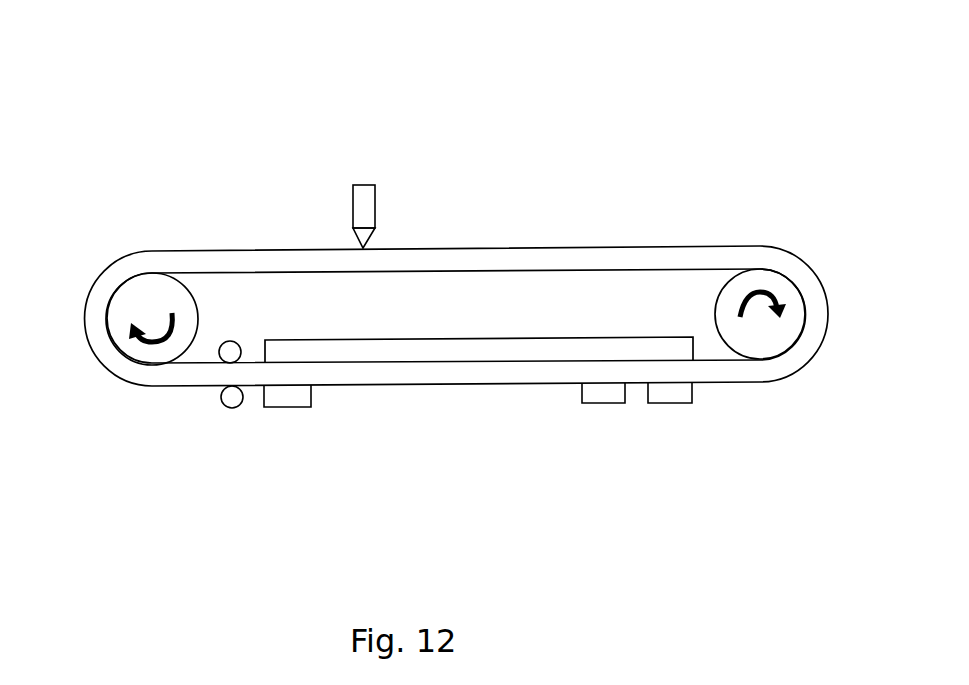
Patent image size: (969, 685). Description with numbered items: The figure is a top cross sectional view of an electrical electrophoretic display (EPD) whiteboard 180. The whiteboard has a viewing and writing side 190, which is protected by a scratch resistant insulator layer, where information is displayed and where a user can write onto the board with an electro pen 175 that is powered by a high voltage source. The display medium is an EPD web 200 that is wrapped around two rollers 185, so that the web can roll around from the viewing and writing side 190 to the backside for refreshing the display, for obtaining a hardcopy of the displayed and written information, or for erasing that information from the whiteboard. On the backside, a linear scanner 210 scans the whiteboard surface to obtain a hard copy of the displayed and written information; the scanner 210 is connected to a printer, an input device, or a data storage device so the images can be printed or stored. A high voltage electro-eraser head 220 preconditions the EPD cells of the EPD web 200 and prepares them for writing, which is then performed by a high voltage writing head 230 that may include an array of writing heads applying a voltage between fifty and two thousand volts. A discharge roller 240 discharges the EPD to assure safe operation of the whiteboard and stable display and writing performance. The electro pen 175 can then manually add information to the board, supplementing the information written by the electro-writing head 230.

The electrophoretic display whiteboard 180 is at (152, 90).
The viewing and writing side 190 is at (498, 217).
The EPD web 200 is at (617, 246).
The rollers 185 is at (148, 295).
The electro pen 175 is at (352, 185).
The discharge roller 240 is at (217, 387).
The high voltage writing head 230 is at (287, 407).
The high voltage electro-eraser head 220 is at (602, 404).
The linear scanner 210 is at (672, 404).